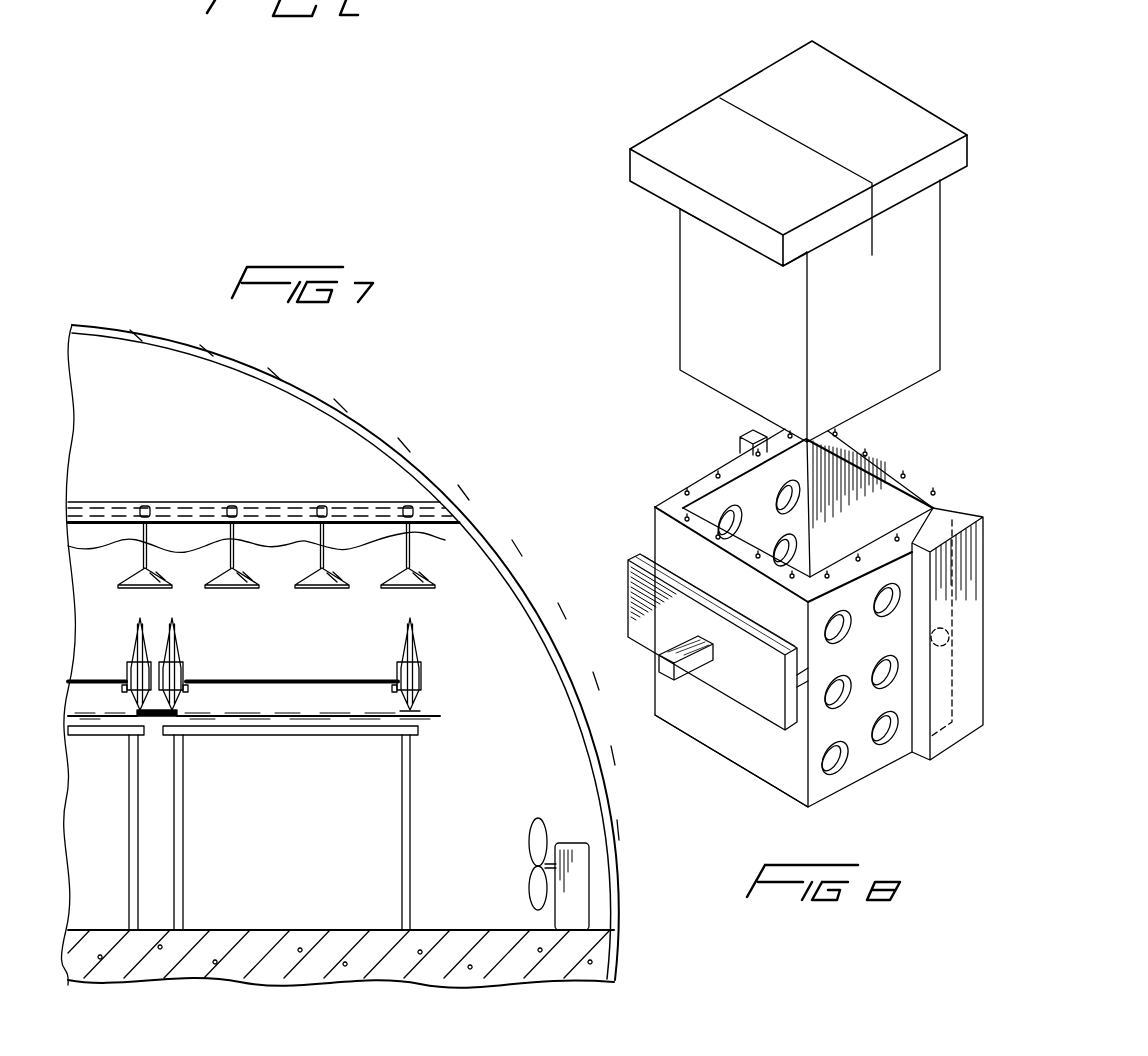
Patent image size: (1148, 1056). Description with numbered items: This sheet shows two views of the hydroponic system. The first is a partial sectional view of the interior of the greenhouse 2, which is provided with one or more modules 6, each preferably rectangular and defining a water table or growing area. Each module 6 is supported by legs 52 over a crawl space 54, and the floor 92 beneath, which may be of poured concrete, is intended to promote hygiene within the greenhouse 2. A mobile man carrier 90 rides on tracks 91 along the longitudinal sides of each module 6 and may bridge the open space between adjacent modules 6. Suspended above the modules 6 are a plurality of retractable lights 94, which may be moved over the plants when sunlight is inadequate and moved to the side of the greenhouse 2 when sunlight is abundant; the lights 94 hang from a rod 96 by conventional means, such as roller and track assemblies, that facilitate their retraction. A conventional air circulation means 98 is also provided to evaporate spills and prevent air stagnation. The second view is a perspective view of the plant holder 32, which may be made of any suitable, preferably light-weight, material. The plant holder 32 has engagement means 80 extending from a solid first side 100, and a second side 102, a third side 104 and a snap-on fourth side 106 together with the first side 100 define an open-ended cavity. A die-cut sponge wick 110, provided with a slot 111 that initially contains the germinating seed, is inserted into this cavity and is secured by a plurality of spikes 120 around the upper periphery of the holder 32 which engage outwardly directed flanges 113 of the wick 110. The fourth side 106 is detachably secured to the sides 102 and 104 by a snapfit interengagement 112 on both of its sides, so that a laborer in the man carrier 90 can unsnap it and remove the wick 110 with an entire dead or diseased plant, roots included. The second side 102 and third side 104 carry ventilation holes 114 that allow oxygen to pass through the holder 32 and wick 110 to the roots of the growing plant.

In FIG. 7, the greenhouse 2 is at (470, 508).
In FIG. 7, the rod 96 is at (289, 503).
In FIG. 7, the retractable lights 94 is at (417, 574).
In FIG. 7, the mobile man carrier 90 is at (100, 680).
In FIG. 7, the tracks 91 is at (412, 711).
In FIG. 7, the module 6 is at (385, 722).
In FIG. 7, the legs 52 is at (413, 802).
In FIG. 7, the crawl space 54 is at (381, 874).
In FIG. 7, the air circulation means 98 is at (572, 850).
In FIG. 7, the floor 92 is at (598, 945).
In FIG. 8, the sponge wick 110 is at (862, 88).
In FIG. 8, the outwardly directed flanges 113 is at (947, 160).
In FIG. 8, the slot 111 is at (875, 203).
In FIG. 8, the second side 102 is at (742, 490).
In FIG. 8, the snap-on fourth side 106 is at (875, 503).
In FIG. 8, the solid first side 100 is at (672, 530).
In FIG. 8, the spikes 120 is at (934, 506).
In FIG. 8, the snapfit interengagement 112 is at (931, 637).
In FIG. 8, the ventilation holes 114 is at (862, 646).
In FIG. 8, the third side 104 is at (858, 760).
In FIG. 8, the plant holder 32 is at (754, 788).
In FIG. 8, the engagement means 80 is at (609, 594).